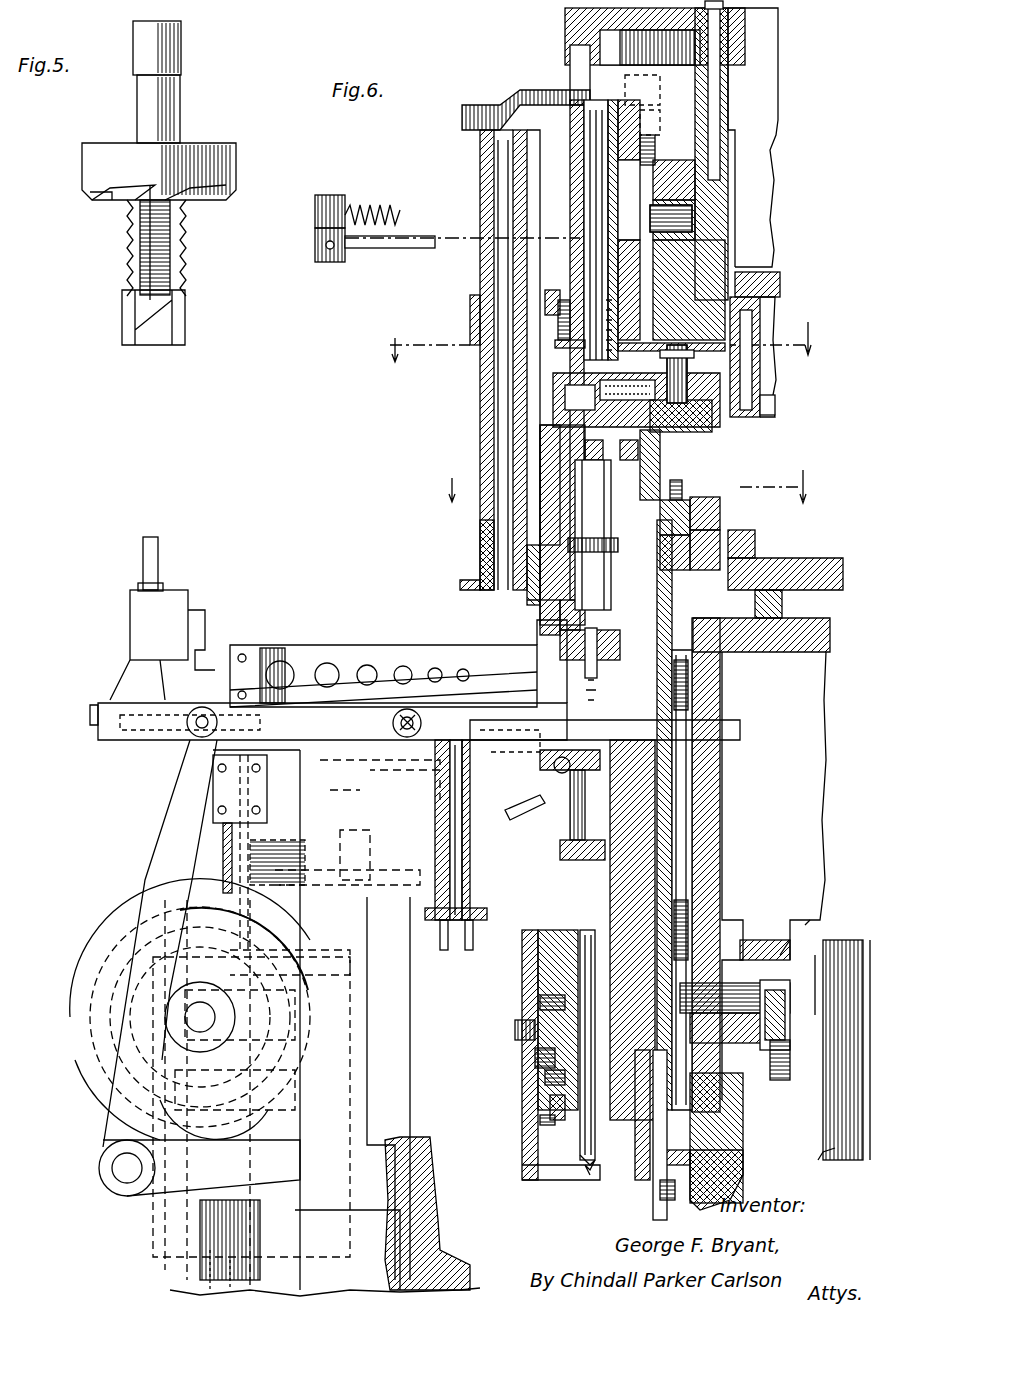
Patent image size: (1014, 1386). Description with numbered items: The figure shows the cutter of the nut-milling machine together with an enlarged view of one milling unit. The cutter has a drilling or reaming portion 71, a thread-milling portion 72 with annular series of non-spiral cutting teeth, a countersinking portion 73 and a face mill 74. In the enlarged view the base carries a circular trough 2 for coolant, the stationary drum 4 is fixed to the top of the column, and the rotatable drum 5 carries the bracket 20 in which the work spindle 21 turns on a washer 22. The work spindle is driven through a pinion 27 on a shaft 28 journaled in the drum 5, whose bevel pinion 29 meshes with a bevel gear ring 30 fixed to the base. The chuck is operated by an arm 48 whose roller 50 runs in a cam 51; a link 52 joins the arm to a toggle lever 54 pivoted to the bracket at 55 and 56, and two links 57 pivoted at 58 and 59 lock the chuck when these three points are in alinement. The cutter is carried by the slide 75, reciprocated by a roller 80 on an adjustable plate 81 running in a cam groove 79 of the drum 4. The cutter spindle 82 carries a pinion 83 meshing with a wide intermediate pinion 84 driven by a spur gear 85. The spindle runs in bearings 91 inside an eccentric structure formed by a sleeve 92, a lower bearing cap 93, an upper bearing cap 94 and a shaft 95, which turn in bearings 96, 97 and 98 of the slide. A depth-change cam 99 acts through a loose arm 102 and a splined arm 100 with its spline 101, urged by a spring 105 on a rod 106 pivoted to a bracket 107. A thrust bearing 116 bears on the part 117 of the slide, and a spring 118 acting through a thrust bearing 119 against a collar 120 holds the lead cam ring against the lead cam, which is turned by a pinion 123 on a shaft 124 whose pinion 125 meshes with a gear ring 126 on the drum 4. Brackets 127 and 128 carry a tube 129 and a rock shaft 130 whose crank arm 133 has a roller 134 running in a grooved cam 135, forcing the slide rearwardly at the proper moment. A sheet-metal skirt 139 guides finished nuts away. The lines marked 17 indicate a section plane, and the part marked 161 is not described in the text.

In FIG. 5, the drilling or reaming portion 71 is at (122, 322).
In FIG. 5, the thread-milling portion 72 is at (135, 265).
In FIG. 5, the countersinking portion 73 is at (140, 205).
In FIG. 5, the face mill 74 is at (95, 200).
In FIG. 6, the circular trough 2 is at (435, 1215).
In FIG. 6, the circular frame member or drum 4 is at (755, 225).
In FIG. 6, the drum 5 is at (795, 737).
In FIG. 6, the section line / pin 17 is at (810, 1163).
In FIG. 6, the bracket or frame member 20 is at (665, 832).
In FIG. 6, the work spindle 21 is at (620, 880).
In FIG. 6, the washer 22 is at (630, 486).
In FIG. 6, the pinion 27 is at (745, 958).
In FIG. 6, the shaft 28 is at (745, 990).
In FIG. 6, the bevel pinion 29 is at (540, 1002).
In FIG. 6, the bevel gear ring 30 is at (785, 1060).
In FIG. 6, the arm 48 is at (675, 1180).
In FIG. 6, the roller 50 is at (700, 1178).
In FIG. 6, the cam 51 is at (690, 1155).
In FIG. 6, the link 52 is at (650, 1135).
In FIG. 6, the toggle lever 54 is at (535, 1058).
In FIG. 6, the pivot 55 is at (525, 1030).
In FIG. 6, the pivot 56 is at (690, 960).
In FIG. 6, the links 57 is at (545, 1100).
In FIG. 6, the pivot 58 is at (545, 1080).
In FIG. 6, the pivot 59 is at (545, 1115).
In FIG. 6, the slide 75 is at (540, 395).
In FIG. 6, the cam groove 79 is at (668, 185).
In FIG. 6, the roller 80 is at (730, 198).
In FIG. 6, the plate 81 is at (618, 340).
In FIG. 6, the spindle 82 is at (612, 500).
In FIG. 6, the pinion 83 is at (605, 545).
In FIG. 6, the intermediate pinion 84 is at (725, 540).
In FIG. 6, the spur gear 85 is at (760, 570).
In FIG. 6, the bearings 91 is at (665, 452).
In FIG. 6, the sleeve-like member 92 is at (527, 550).
In FIG. 6, the lower bearing cap 93 is at (638, 660).
In FIG. 6, the upper bearing cap 94 is at (560, 435).
In FIG. 6, the shaft 95 is at (697, 213).
In FIG. 6, the bearing 96 is at (560, 615).
In FIG. 6, the bearing 97 is at (690, 455).
In FIG. 6, the bearing 98 is at (570, 212).
In FIG. 6, the cam 99 is at (722, 150).
In FIG. 6, the arm 100 is at (578, 165).
In FIG. 6, the spline 101 is at (608, 170).
In FIG. 6, the arm 102 is at (565, 125).
In FIG. 6, the coiled expansive spring 105 is at (370, 205).
In FIG. 6, the rod 106 is at (402, 215).
In FIG. 6, the bracket 107 is at (390, 248).
In FIG. 6, the thrust bearing 116 is at (592, 388).
In FIG. 6, the part of the cutter slide 117 is at (505, 375).
In FIG. 6, the coiled expansive spring 118 is at (584, 345).
In FIG. 6, the thrust bearing 119 is at (575, 325).
In FIG. 6, the collar 120 is at (578, 300).
In FIG. 6, the pinion 123 is at (680, 415).
In FIG. 6, the shaft 124 is at (740, 272).
In FIG. 6, the pinion 125 is at (765, 385).
In FIG. 6, the gear ring 126 is at (765, 402).
In FIG. 6, the bracket 127 is at (480, 545).
In FIG. 6, the bracket 128 is at (470, 315).
In FIG. 6, the vertical tube 129 is at (480, 288).
In FIG. 6, the rock shaft 130 is at (498, 452).
In FIG. 6, the crank arm 133 is at (495, 96).
In FIG. 6, the roller 134 is at (575, 58).
In FIG. 6, the grooved cam 135 is at (565, 16).
In FIG. 6, the sheet-metal skirt 139 is at (525, 818).
In FIG. 6, the bracket 161 is at (470, 878).